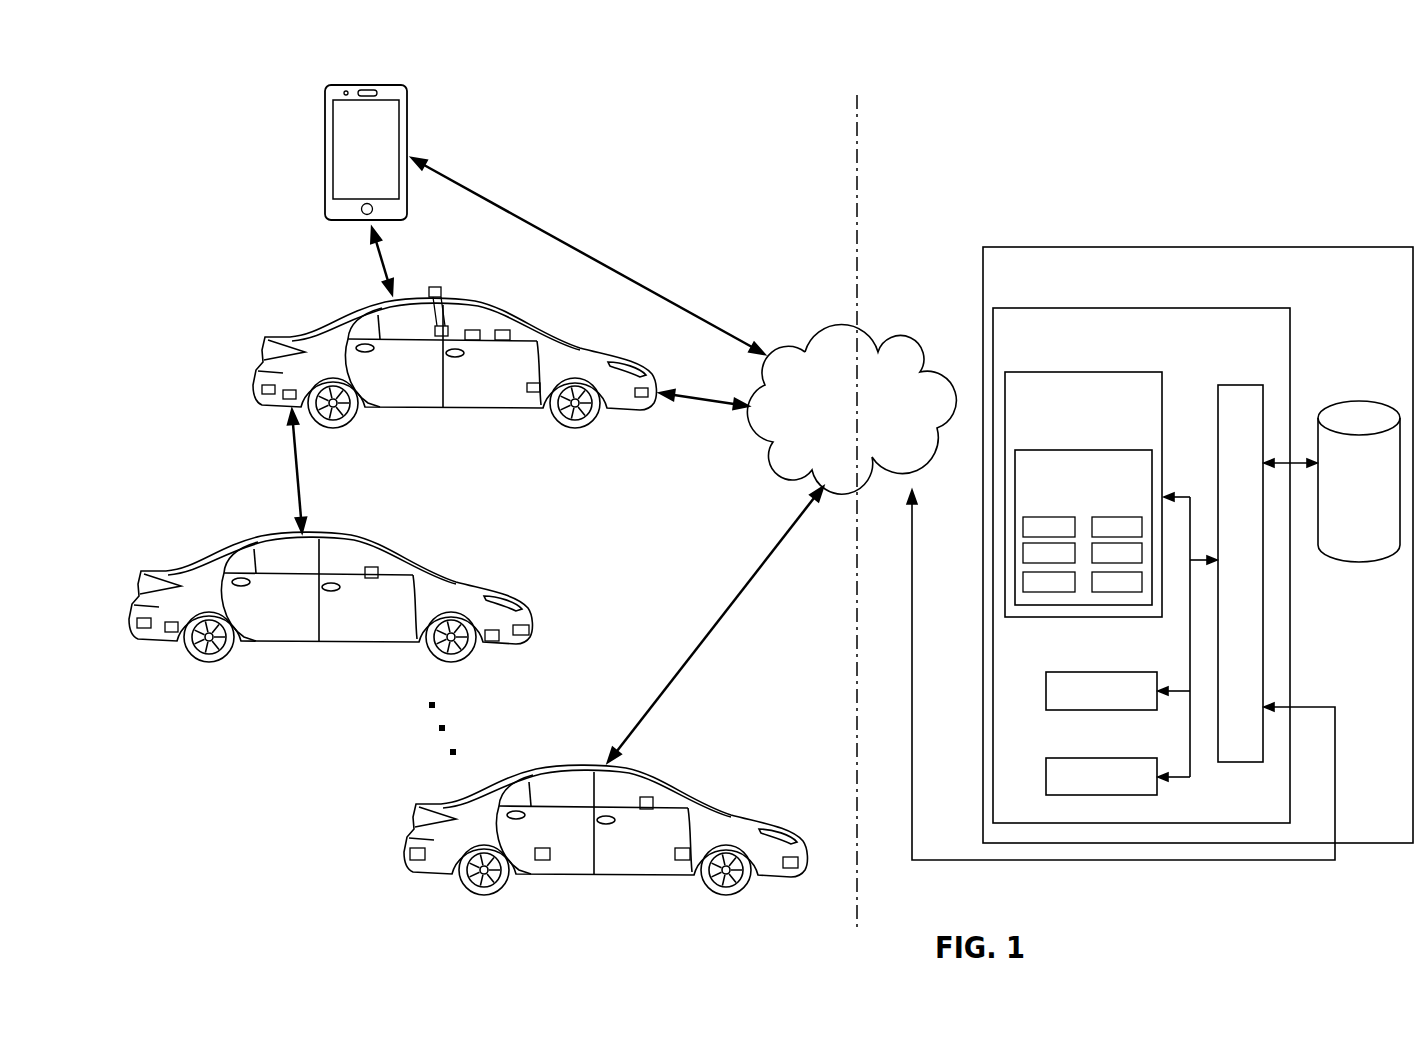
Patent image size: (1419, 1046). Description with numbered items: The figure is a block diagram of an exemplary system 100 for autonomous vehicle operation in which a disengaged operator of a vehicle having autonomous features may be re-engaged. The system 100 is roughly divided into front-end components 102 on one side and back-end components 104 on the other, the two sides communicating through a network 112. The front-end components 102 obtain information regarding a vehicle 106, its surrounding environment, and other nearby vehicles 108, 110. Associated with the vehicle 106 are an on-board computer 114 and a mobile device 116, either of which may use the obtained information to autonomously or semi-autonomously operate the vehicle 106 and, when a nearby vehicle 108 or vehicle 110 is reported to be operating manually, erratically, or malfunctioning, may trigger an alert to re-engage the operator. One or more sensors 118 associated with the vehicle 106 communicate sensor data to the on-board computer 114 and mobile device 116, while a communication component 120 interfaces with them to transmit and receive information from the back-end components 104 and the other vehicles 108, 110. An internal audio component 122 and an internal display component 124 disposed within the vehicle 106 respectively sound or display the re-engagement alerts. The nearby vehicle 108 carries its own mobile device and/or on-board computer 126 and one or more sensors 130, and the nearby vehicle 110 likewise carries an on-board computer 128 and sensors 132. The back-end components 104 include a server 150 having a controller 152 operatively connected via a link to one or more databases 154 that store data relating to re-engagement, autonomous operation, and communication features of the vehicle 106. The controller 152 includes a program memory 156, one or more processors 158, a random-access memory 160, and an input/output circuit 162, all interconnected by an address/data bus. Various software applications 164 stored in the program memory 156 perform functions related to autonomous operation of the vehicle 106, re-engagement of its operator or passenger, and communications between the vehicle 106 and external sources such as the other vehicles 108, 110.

The system 100 is at (839, 63).
The front-end components 102 is at (728, 126).
The back-end components 104 is at (979, 121).
The vehicle 106 is at (585, 345).
The nearby vehicle 108 is at (460, 579).
The nearby vehicle 110 is at (733, 812).
The network 112 is at (913, 337).
The on-board computer 114 is at (505, 330).
The mobile device 116 is at (388, 84).
The sensors 118 is at (267, 395).
The communication component 120 is at (434, 286).
The internal audio component 122 is at (443, 326).
The internal display component 124 is at (475, 330).
The on-board computer 126 is at (373, 566).
The on-board computer 128 is at (649, 796).
The sensors 130 is at (145, 629).
The sensors 132 is at (420, 861).
The server 150 is at (1285, 246).
The controller 152 is at (1188, 307).
The database 154 is at (1360, 401).
The program memory 156 is at (1125, 370).
The processor 158 is at (1115, 671).
The random-access memory 160 is at (1115, 757).
The input/output circuit 162 is at (1243, 384).
The software applications 164 is at (1123, 449).